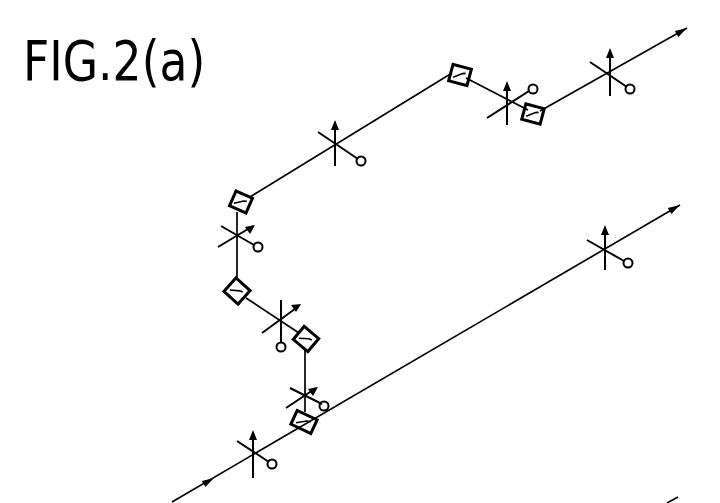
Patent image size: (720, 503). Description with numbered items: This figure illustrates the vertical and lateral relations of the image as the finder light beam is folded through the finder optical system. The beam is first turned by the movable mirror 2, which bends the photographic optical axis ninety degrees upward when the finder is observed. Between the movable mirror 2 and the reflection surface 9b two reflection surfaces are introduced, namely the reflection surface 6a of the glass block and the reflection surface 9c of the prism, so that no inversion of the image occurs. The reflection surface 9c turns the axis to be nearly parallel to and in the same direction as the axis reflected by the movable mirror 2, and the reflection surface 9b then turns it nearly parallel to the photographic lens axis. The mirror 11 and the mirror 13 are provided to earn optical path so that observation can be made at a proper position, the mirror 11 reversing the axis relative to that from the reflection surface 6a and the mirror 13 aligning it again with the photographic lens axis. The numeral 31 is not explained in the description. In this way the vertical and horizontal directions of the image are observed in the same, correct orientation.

The movable mirror 2 is at (312, 435).
The reflection surface 6a is at (318, 330).
The reflection surface 9b is at (231, 197).
The reflection surface 9c is at (223, 297).
The mirror 11 is at (450, 62).
The mirror 13 is at (537, 123).
The laser beam 31 is at (426, 354).